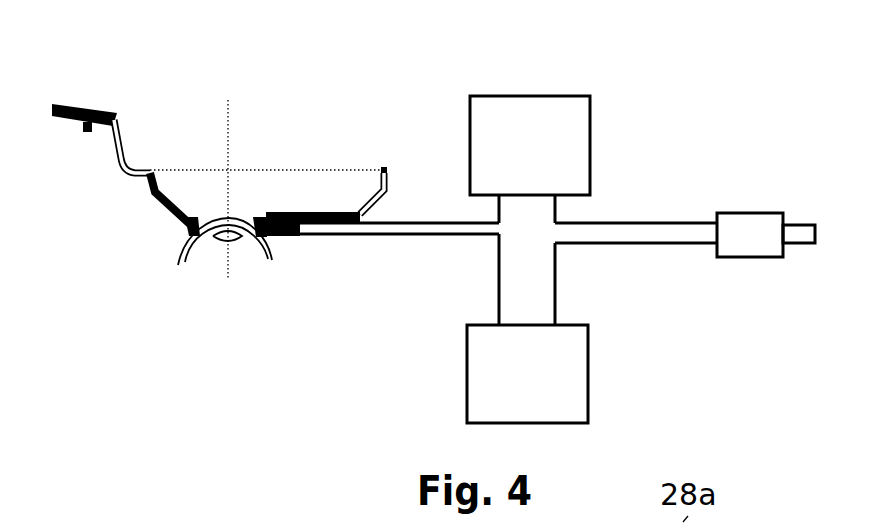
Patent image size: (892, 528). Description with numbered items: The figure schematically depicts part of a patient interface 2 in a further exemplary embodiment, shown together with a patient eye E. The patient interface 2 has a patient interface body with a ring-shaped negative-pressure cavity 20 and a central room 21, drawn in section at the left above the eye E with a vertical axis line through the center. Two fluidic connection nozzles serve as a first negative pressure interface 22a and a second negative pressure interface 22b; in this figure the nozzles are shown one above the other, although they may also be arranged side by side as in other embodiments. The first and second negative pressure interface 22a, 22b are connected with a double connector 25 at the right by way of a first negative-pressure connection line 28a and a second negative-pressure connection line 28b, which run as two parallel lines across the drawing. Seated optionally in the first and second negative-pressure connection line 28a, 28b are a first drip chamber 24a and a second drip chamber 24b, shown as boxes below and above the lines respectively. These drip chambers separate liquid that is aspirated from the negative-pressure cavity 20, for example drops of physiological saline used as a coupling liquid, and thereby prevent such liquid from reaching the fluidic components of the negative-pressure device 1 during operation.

The negative-pressure device 1 is at (152, 200).
The patient interface 2 is at (688, 75).
The ring-shaped negative-pressure cavity 20 is at (258, 215).
The central room 21 is at (200, 198).
The first negative pressure interface 22a is at (287, 240).
The second negative pressure interface 22b is at (283, 215).
The first drip chamber 24a is at (559, 393).
The second drip chamber 24b is at (561, 168).
The double connector 25 is at (752, 247).
The first negative-pressure connection line 28a is at (449, 243).
The second negative-pressure connection line 28b is at (420, 218).
The patient eye E is at (192, 257).